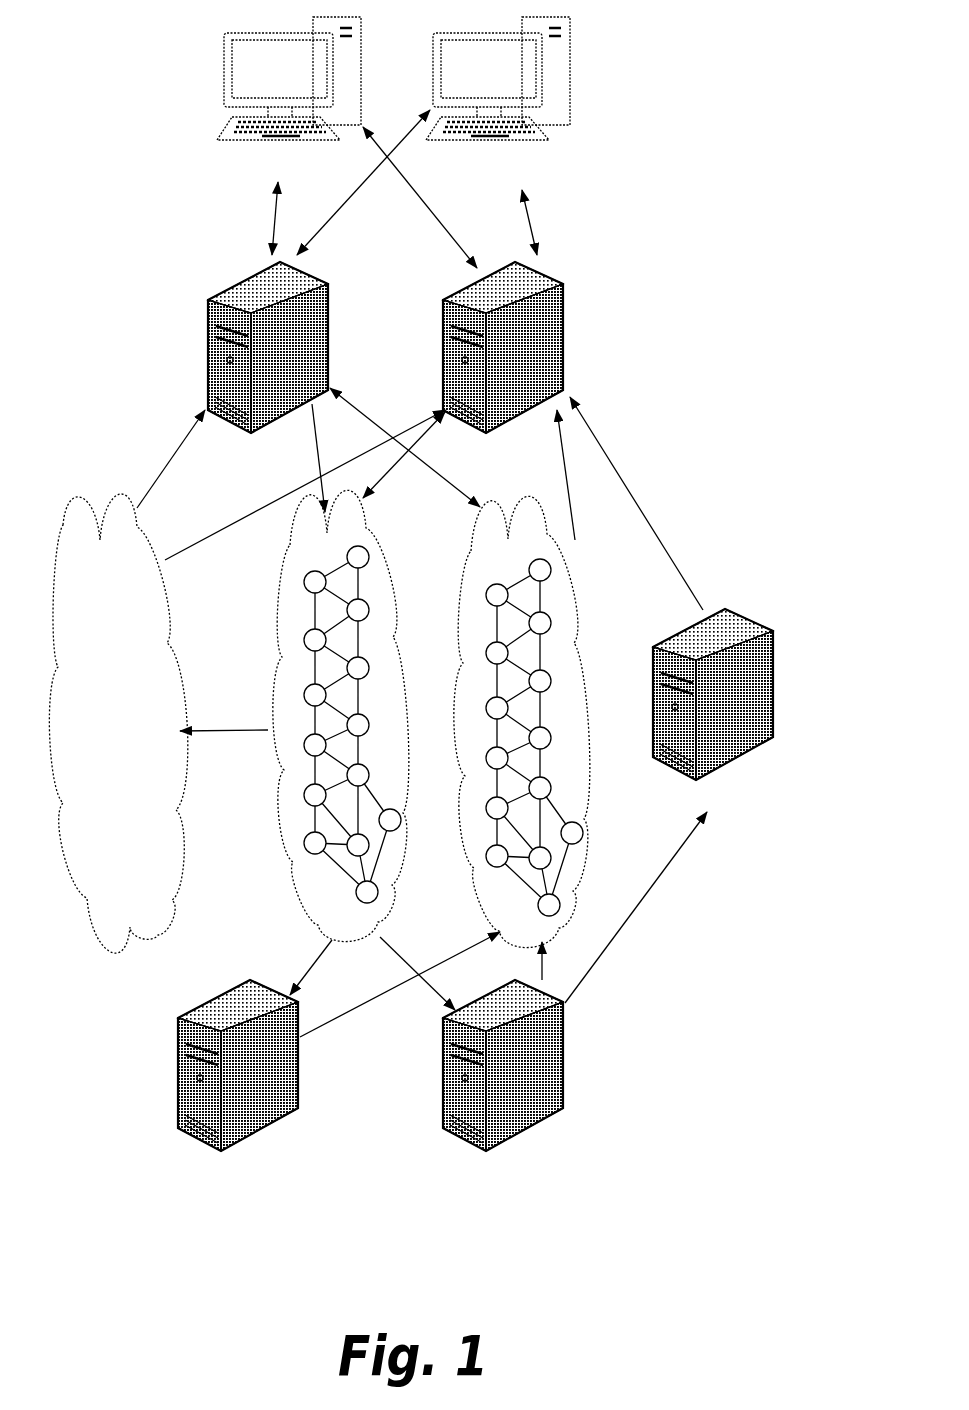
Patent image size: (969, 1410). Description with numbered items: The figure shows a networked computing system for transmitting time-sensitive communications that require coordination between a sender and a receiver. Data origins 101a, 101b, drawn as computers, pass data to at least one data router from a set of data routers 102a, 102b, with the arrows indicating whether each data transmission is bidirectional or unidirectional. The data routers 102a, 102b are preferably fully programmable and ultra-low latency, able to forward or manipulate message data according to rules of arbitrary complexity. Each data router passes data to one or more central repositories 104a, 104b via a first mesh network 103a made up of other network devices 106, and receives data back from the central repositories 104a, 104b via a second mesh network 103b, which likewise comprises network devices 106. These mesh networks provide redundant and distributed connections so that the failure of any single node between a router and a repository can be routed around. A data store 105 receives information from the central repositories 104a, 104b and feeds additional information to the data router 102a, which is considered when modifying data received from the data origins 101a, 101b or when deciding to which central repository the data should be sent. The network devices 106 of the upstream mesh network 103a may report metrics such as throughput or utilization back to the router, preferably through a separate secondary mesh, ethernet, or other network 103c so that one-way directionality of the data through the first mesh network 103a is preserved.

The data origin 101a is at (498, 98).
The data origin 101b is at (288, 98).
The data router 102a is at (503, 375).
The data router 102b is at (268, 375).
The first mesh network 103a is at (278, 650).
The second mesh network 103b is at (585, 675).
The network 103c is at (118, 723).
The central repository 104a is at (503, 1107).
The central repository 104b is at (238, 1107).
The data store 105 is at (708, 708).
The network device 106 is at (305, 748).